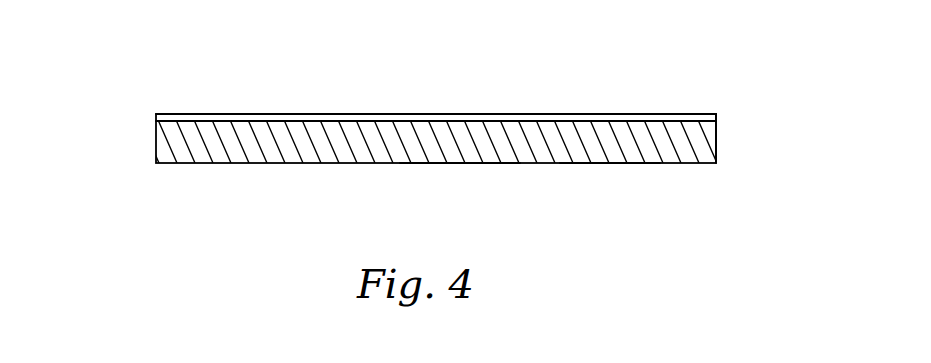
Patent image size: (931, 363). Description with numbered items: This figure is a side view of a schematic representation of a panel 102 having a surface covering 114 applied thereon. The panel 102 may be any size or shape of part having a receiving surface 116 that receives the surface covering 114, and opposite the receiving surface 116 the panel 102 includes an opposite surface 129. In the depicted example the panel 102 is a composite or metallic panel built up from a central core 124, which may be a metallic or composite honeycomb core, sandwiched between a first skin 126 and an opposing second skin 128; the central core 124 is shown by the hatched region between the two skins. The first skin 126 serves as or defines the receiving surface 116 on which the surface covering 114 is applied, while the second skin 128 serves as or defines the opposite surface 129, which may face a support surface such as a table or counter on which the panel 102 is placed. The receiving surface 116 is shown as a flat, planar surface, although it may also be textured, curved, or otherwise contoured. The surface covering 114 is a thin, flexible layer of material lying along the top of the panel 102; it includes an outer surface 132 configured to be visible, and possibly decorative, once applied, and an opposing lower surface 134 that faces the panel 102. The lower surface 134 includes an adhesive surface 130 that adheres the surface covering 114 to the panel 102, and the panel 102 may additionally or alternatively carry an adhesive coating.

The panel 102 is at (156, 143).
The surface covering 114 is at (688, 113).
The receiving surface 116 is at (342, 121).
The central core 124 is at (353, 152).
The first skin 126 is at (618, 120).
The second skin 128 is at (607, 165).
The opposite surface 129 is at (453, 173).
The adhesive surface 130 is at (146, 119).
The outer surface 132 is at (445, 114).
The lower surface 134 is at (676, 122).